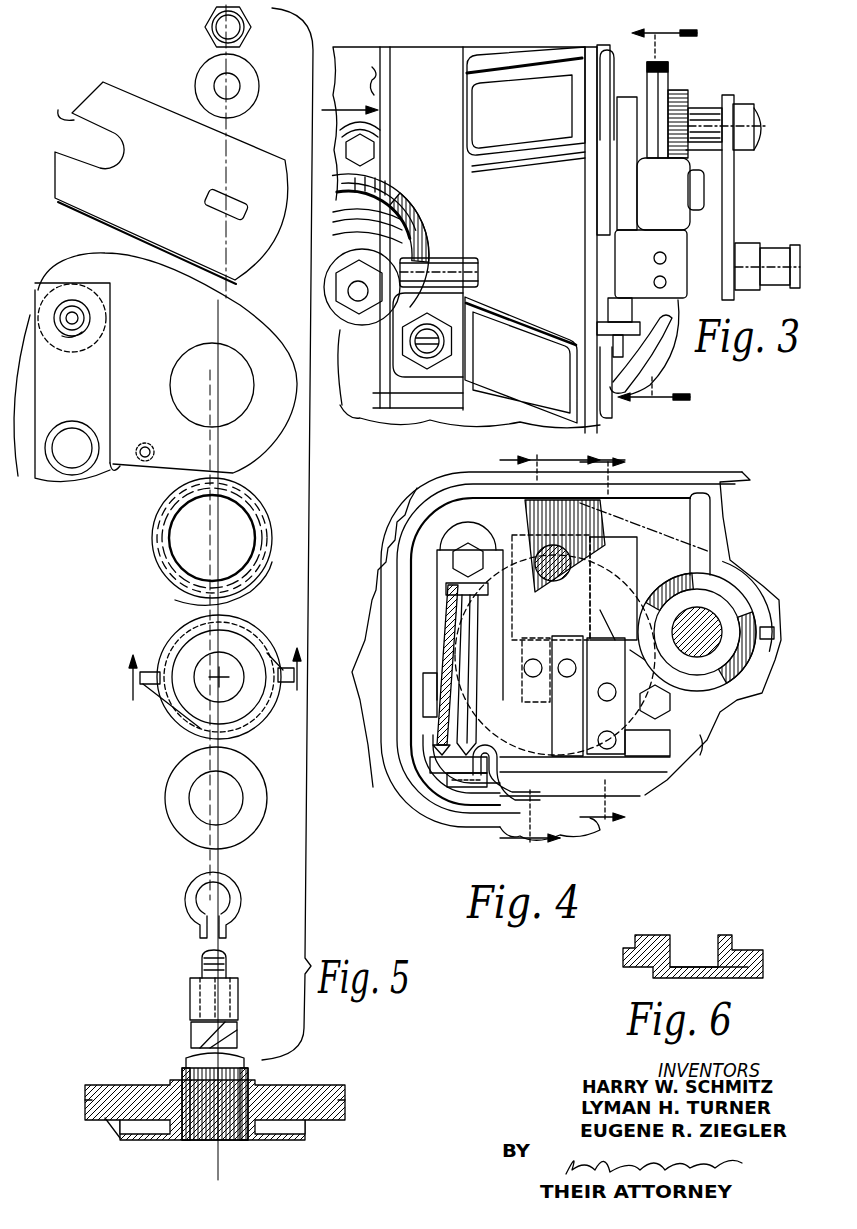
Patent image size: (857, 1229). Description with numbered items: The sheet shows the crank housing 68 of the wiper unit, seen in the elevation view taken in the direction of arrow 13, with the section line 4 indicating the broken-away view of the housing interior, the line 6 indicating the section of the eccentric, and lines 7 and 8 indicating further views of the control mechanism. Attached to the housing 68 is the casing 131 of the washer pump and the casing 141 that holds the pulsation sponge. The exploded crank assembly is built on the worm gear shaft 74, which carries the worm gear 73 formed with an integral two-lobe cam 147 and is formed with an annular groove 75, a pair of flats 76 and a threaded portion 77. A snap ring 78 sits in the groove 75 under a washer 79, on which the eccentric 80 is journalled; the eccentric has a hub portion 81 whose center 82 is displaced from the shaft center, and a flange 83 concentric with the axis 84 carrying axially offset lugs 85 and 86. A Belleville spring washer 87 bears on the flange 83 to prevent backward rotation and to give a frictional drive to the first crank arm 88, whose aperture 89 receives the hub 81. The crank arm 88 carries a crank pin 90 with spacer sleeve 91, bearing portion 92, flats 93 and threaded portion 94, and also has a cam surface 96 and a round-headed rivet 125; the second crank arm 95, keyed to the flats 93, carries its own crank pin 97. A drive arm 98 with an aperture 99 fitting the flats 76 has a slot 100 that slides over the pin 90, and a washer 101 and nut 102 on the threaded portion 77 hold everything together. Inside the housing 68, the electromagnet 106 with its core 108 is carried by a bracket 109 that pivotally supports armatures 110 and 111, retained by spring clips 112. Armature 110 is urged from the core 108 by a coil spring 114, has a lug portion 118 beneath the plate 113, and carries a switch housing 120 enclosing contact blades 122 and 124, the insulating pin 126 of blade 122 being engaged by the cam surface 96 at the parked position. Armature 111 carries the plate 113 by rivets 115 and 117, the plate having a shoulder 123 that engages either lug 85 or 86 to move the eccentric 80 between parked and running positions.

In FIG. 3, the line 4— 4 is at (665, 215).
In FIG. 5, the line 6— 6 is at (206, 692).
In FIG. 4, the section line 7- 7 is at (554, 653).
In FIG. 4, the section line 8- 8 is at (611, 637).
In FIG. 3, the view direction arrow 13 is at (350, 99).
In FIG. 3, the crank housing 68 is at (448, 54).
In FIG. 4, the crank housing 68 is at (376, 622).
In FIG. 5, the worm gear 73 is at (340, 1100).
In FIG. 5, the worm gear shaft 74 is at (230, 1146).
In FIG. 3, the worm gear shaft 74 is at (705, 190).
In FIG. 4, the worm gear shaft 74 is at (740, 668).
In FIG. 5, the annular groove 75 is at (238, 1032).
In FIG. 5, the flats 76 is at (190, 985).
In FIG. 5, the threaded portion 77 is at (228, 966).
In FIG. 5, the snap ring 78 is at (238, 890).
In FIG. 5, the washer 79 is at (258, 776).
In FIG. 5, the eccentric 80 is at (282, 612).
In FIG. 4, the eccentric 80 is at (730, 592).
In FIG. 6, the eccentric 80 is at (776, 918).
In FIG. 5, the hub portion 81 is at (183, 655).
In FIG. 4, the hub portion 81 is at (728, 690).
In FIG. 6, the hub portion 81 is at (658, 934).
In FIG. 5, the center 82 is at (206, 680).
In FIG. 4, the center 82 is at (688, 620).
In FIG. 5, the flange 83 is at (195, 732).
In FIG. 6, the flange 83 is at (748, 956).
In FIG. 5, the axis 84 is at (262, 590).
In FIG. 5, the lug 85 is at (284, 660).
In FIG. 4, the lug 85 is at (768, 620).
In FIG. 6, the lug 85 is at (762, 968).
In FIG. 5, the lug 86 is at (148, 670).
In FIG. 4, the lug 86 is at (633, 648).
In FIG. 6, the lug 86 is at (624, 956).
In FIG. 5, the spring washer 87 is at (254, 516).
In FIG. 5, the first crank arm 88 is at (270, 320).
In FIG. 3, the first crank arm 88 is at (668, 76).
In FIG. 4, the first crank arm 88 is at (545, 538).
In FIG. 5, the aperture 89 is at (250, 378).
In FIG. 5, the crank pin 90 is at (68, 312).
In FIG. 3, the crank pin 90 is at (756, 130).
In FIG. 4, the crank pin 90 is at (572, 556).
In FIG. 5, the spacer sleeve 91 is at (106, 346).
In FIG. 3, the spacer sleeve 91 is at (700, 154).
In FIG. 5, the bearing portion 92 is at (82, 308).
In FIG. 3, the bearing portion 92 is at (705, 108).
In FIG. 5, the flats 93 is at (90, 324).
In FIG. 5, the threaded portion 94 is at (78, 340).
In FIG. 3, the threaded portion 94 is at (742, 118).
In FIG. 5, the second crank arm 95 is at (102, 478).
In FIG. 3, the second crank arm 95 is at (734, 212).
In FIG. 5, the cam surface 96 is at (22, 456).
In FIG. 4, the cam surface 96 is at (437, 552).
In FIG. 5, the crank pin 97 is at (73, 468).
In FIG. 3, the crank pin 97 is at (770, 262).
In FIG. 5, the drive arm 98 is at (90, 90).
In FIG. 3, the drive arm 98 is at (665, 70).
In FIG. 5, the aperture 99 is at (232, 200).
In FIG. 5, the slot 100 is at (60, 116).
In FIG. 5, the washer 101 is at (250, 83).
In FIG. 5, the nut 102 is at (206, 15).
In FIG. 4, the electromagnet 106 is at (630, 584).
In FIG. 4, the core 108 is at (538, 700).
In FIG. 3, the bracket 109 is at (598, 328).
In FIG. 4, the bracket 109 is at (658, 768).
In FIG. 3, the armature 110 is at (600, 183).
In FIG. 4, the armature 110 is at (507, 540).
In FIG. 4, the armature 111 is at (700, 746).
In FIG. 3, the spring clips 112 is at (598, 350).
In FIG. 4, the spring clips 112 is at (647, 793).
In FIG. 3, the plate 113 is at (612, 206).
In FIG. 4, the plate 113 is at (645, 527).
In FIG. 3, the coil spring 114 is at (610, 100).
In FIG. 4, the rivet 115 is at (580, 728).
In FIG. 4, the rivet 117 is at (596, 740).
In FIG. 4, the lug portion 118 is at (566, 598).
In FIG. 3, the switch housing 120 is at (656, 230).
In FIG. 4, the switch housing 120 is at (436, 727).
In FIG. 4, the contact blade 122 is at (450, 598).
In FIG. 4, the shoulder 123 is at (606, 600).
In FIG. 4, the contact blade 124 is at (460, 656).
In FIG. 5, the rivet 125 is at (145, 465).
In FIG. 4, the rivet 125 is at (647, 743).
In FIG. 4, the pin 126 is at (456, 626).
In FIG. 3, the casing 131 is at (405, 195).
In FIG. 3, the casing 141 is at (364, 318).
In FIG. 5, the two-lobe cam 147 is at (112, 1132).